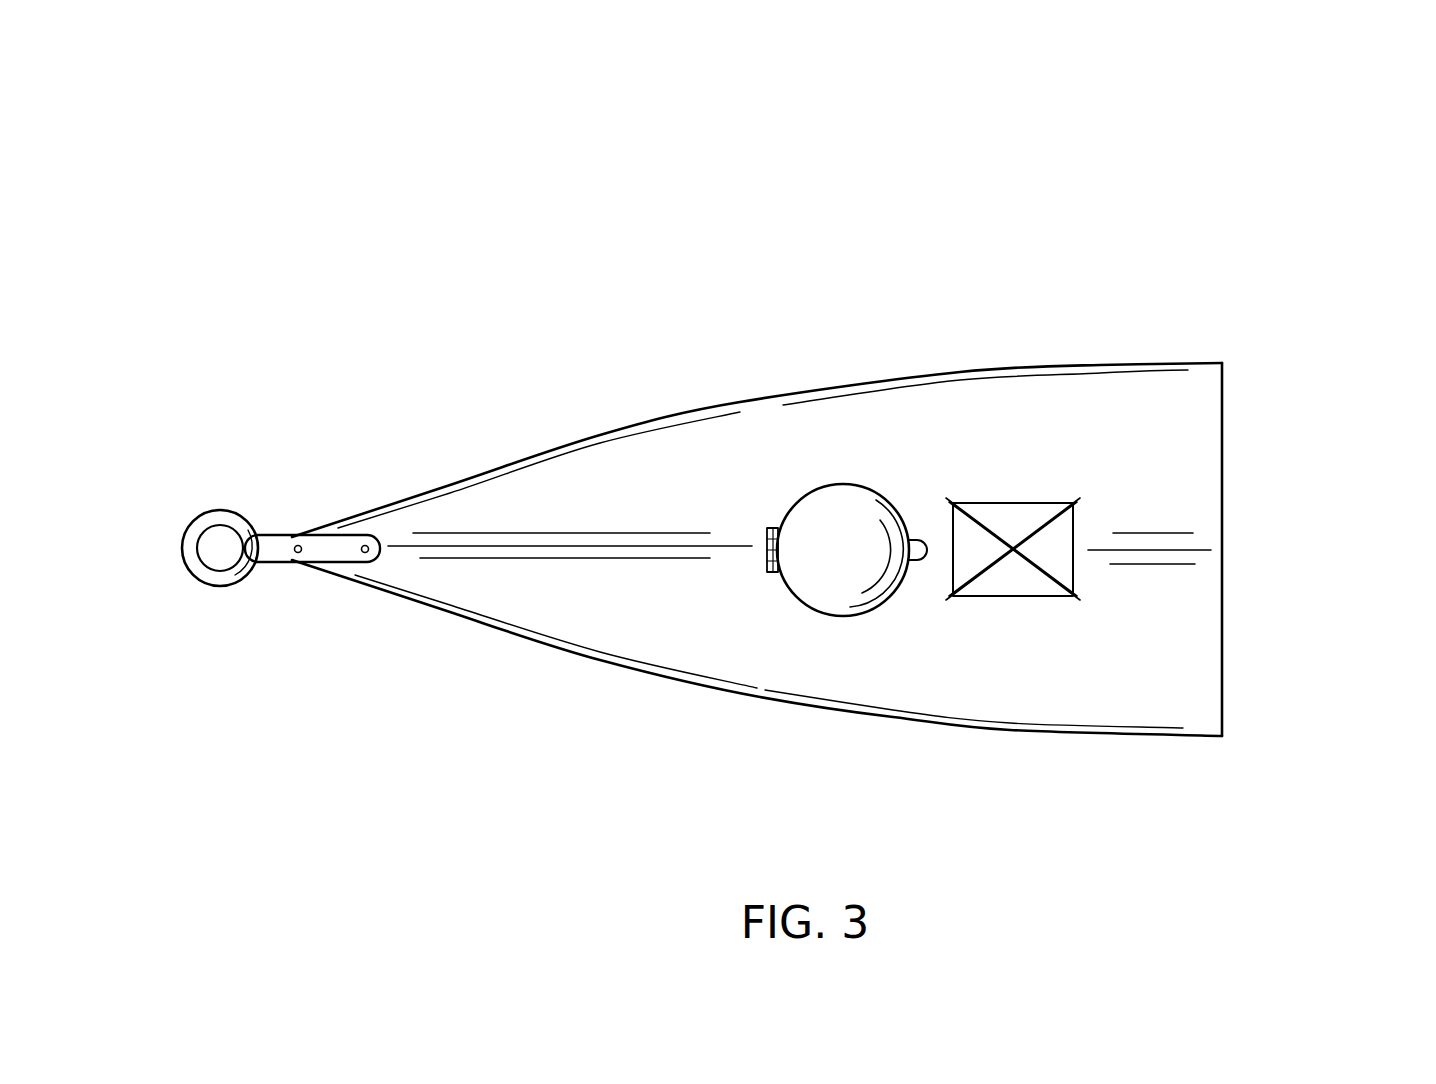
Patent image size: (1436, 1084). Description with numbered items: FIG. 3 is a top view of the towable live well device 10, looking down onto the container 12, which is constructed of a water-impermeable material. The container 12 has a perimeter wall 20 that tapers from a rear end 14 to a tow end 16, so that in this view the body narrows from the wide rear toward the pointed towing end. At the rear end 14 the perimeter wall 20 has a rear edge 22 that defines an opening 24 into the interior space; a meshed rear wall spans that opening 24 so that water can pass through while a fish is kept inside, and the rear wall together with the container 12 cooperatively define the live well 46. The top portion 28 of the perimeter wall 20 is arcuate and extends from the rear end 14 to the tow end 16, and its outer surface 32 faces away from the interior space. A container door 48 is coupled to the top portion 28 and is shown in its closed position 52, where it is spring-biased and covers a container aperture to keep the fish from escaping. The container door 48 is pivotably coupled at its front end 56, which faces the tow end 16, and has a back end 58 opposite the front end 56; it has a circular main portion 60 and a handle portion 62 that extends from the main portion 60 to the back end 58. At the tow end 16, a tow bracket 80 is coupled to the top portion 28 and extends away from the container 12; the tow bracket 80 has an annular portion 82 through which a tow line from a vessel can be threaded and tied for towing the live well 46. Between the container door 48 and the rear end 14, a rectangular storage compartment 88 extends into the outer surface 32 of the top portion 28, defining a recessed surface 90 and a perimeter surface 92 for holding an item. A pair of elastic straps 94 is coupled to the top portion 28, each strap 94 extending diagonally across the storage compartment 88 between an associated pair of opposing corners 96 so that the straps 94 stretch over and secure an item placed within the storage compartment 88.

The towable live well device 10 is at (968, 140).
The container 12 is at (640, 460).
The rear end 14 is at (1222, 400).
The tow end 16 is at (287, 567).
The perimeter wall 20 is at (615, 628).
The rear edge 22 is at (1222, 641).
The opening 24 is at (1268, 540).
The top portion 28 is at (1162, 402).
The outer surface 32 is at (562, 462).
The live well 46 is at (997, 870).
The container door 48 is at (823, 503).
The closed position 52 is at (804, 650).
The front end 56 is at (768, 540).
The back end 58 is at (927, 575).
The main portion 60 is at (853, 510).
The handle portion 62 is at (915, 530).
The tow bracket 80 is at (275, 537).
The annular portion 82 is at (195, 537).
The storage compartment 88 is at (1005, 625).
The recessed surface 90 is at (1015, 525).
The perimeter surface 92 is at (1073, 553).
The strap 94 is at (973, 515).
The corners 96 is at (957, 503).